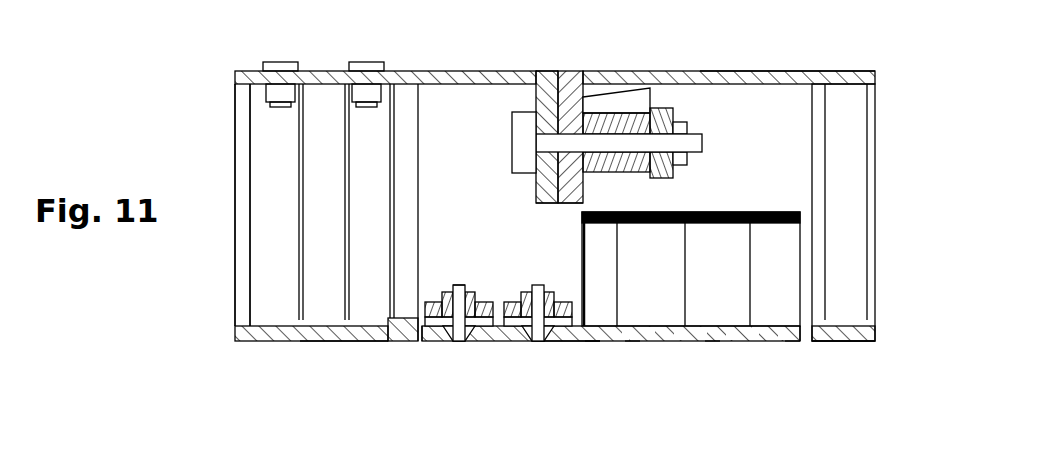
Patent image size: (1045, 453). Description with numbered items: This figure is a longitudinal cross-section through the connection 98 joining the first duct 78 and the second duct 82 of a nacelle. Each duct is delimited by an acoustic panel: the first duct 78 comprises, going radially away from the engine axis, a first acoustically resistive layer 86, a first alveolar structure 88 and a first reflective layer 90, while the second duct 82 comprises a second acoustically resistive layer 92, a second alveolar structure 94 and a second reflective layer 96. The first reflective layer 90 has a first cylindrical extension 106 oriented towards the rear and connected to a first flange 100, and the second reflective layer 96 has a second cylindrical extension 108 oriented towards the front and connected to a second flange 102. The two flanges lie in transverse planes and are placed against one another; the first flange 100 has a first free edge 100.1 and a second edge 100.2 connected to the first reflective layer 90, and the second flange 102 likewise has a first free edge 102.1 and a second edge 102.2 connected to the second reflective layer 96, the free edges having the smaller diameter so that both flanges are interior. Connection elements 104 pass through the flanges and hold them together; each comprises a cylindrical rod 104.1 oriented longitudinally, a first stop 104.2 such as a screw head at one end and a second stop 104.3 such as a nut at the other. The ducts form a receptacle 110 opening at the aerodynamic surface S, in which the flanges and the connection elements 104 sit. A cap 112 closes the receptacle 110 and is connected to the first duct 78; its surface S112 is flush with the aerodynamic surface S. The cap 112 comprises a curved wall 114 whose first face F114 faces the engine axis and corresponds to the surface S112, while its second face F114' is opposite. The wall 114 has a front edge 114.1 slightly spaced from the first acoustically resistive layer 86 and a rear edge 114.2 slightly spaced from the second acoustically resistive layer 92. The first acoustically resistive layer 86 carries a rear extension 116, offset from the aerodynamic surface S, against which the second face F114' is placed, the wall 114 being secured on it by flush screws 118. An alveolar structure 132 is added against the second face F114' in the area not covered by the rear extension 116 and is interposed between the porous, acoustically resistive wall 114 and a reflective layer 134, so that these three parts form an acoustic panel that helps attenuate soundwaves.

The first duct 78 is at (418, 350).
The second duct 82 is at (812, 352).
The first acoustically resistive layer 86 is at (250, 343).
The first alveolar structure 88 is at (221, 85).
The first reflective layer 90 is at (247, 70).
The second acoustically resistive layer 92 is at (868, 335).
The second alveolar structure 94 is at (885, 85).
The second reflective layer 96 is at (878, 78).
The connection 98 is at (558, 107).
The first flange 100 is at (550, 110).
The first free edge 100.1 is at (536, 197).
The second edge 100.2 is at (537, 74).
The second flange 102 is at (572, 108).
The first free edge 102.1 is at (583, 192).
The second edge 102.2 is at (575, 88).
The connection element 104 is at (615, 103).
The cylindrical rod 104.1 is at (703, 143).
The first stop 104.2 is at (512, 142).
The second stop 104.3 is at (674, 112).
The first cylindrical extension 106 is at (418, 72).
The second cylindrical extension 108 is at (742, 70).
The receptacle 110 is at (513, 226).
The cap 112 is at (674, 358).
The curved wall 114 is at (563, 343).
The front edge 114.1 is at (425, 342).
The rear edge 114.2 is at (790, 343).
The rear extension 116 is at (494, 290).
The flush screw 118 is at (462, 352).
The alveolar structure 132 is at (758, 282).
The reflective layer 134 is at (723, 212).
The aerodynamic surface S is at (352, 343).
The surface of the cap S112 is at (713, 345).
The first face F114 is at (629, 369).
The second face F114' is at (606, 386).